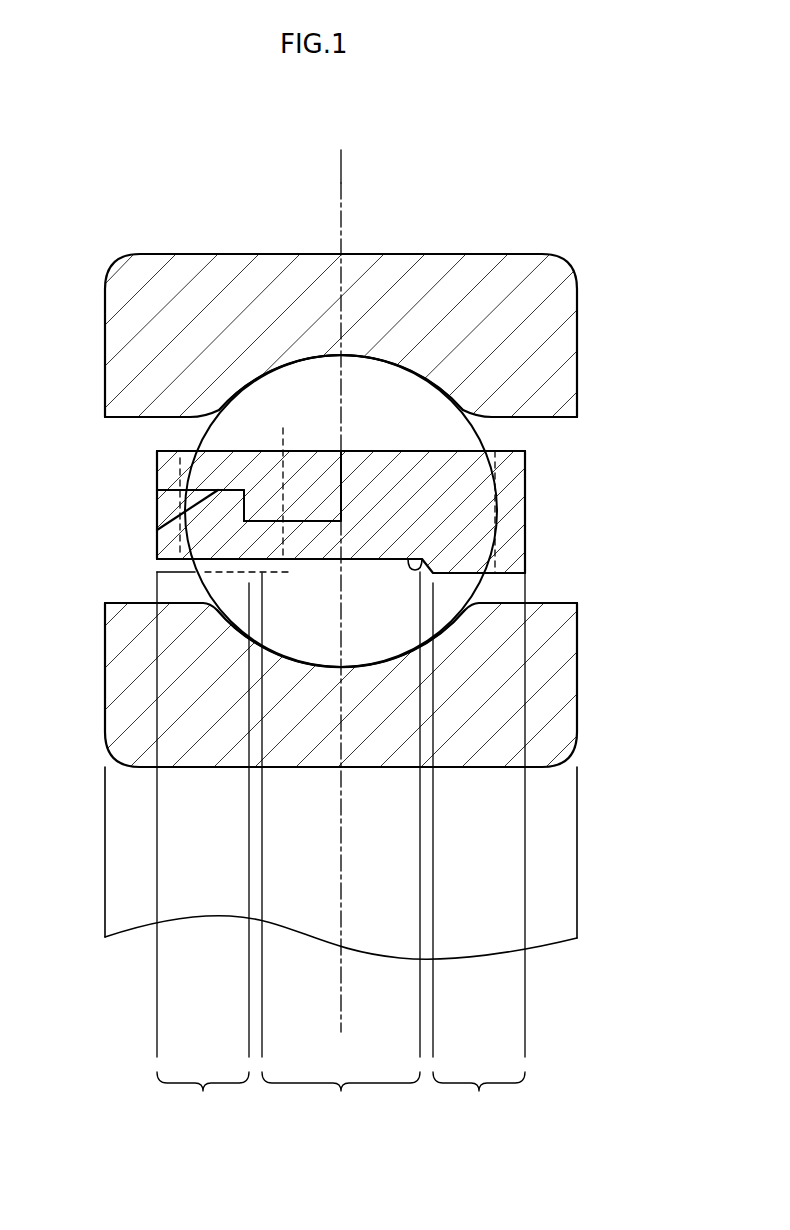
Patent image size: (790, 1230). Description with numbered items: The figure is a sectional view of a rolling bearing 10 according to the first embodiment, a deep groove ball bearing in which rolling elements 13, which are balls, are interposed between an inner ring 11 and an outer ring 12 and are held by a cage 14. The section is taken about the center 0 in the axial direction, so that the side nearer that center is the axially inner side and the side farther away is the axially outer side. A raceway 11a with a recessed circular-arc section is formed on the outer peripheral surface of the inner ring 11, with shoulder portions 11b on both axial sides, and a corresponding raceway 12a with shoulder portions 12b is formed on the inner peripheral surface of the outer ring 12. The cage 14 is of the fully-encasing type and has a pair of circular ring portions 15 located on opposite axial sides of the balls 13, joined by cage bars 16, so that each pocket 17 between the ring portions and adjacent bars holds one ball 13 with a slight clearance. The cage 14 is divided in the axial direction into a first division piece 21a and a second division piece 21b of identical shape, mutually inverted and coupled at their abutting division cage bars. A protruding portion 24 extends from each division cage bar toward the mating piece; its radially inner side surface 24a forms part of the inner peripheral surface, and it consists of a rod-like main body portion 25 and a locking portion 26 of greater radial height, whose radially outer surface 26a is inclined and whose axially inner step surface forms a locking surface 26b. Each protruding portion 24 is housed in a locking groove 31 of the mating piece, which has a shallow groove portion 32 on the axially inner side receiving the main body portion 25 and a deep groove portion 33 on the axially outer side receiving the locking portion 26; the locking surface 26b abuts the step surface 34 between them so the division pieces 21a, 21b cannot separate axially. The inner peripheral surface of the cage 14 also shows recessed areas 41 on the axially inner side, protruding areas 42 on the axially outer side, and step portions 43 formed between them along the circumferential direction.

The center 0 is at (341, 183).
The rolling bearing 10 is at (600, 216).
The inner ring 11 is at (112, 676).
The raceway 11a is at (303, 655).
The shoulder portions 11b is at (130, 603).
The outer ring 12 is at (120, 330).
The raceway 12a is at (318, 356).
The shoulder portions 12b is at (132, 418).
The rolling element 13 is at (231, 421).
The cage 14 is at (562, 487).
The circular ring portions 15 is at (157, 468).
The cage bars 16 is at (435, 439).
The pocket 17 is at (490, 525).
The first division piece 21a is at (163, 440).
The second division piece 21b is at (528, 440).
The protruding portion 24 is at (311, 509).
The radially inner side surface 24a is at (208, 614).
The main body portion 25 is at (297, 575).
The locking portion 26 is at (166, 545).
The radially outer surface 26a is at (158, 510).
The locking surface 26b is at (258, 492).
The locking groove 31 is at (244, 523).
The shallow groove portion 32 is at (320, 561).
The deep groove portion 33 is at (186, 495).
The step surface 34 is at (165, 492).
The recessed area 41 is at (341, 849).
The protruding area 42 is at (341, 849).
The step portion 43 is at (408, 556).